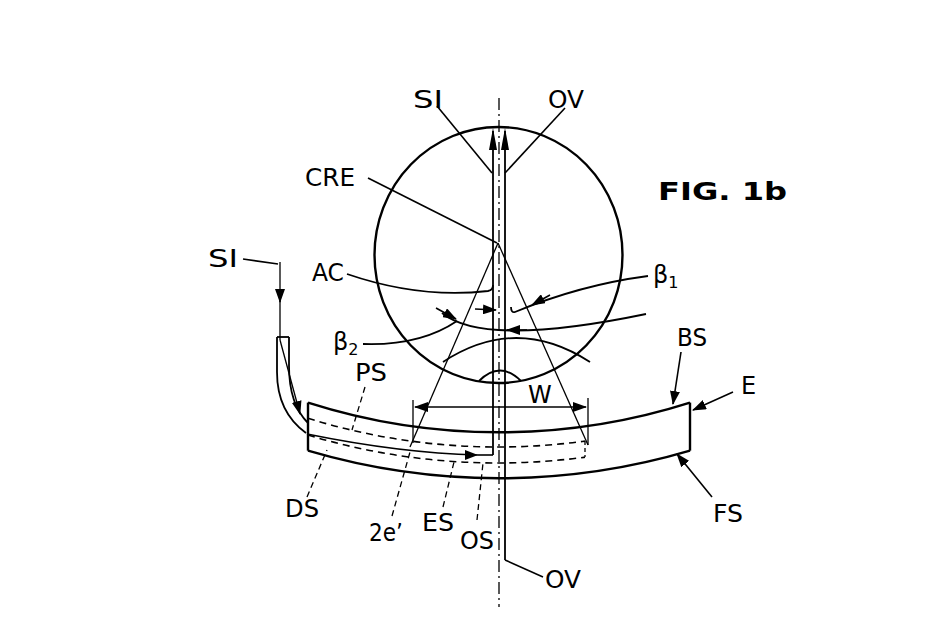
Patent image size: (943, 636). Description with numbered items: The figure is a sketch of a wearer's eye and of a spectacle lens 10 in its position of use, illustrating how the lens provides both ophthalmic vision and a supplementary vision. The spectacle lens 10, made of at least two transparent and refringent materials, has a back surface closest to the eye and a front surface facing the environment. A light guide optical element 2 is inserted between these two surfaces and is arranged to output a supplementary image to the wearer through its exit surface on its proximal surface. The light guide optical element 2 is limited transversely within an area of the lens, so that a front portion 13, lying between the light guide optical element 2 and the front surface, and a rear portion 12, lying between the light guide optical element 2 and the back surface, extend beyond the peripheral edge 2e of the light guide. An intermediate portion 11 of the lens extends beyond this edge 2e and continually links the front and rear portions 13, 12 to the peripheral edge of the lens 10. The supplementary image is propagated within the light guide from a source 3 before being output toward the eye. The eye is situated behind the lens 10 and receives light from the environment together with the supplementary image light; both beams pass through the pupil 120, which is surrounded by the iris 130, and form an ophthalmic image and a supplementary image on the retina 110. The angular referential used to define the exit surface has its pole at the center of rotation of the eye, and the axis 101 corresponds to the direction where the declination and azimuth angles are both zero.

The retina 110 is at (496, 124).
The pupil 120 is at (523, 357).
The iris 130 is at (565, 315).
The axis where the declination and azimuth angles are zero 101 is at (497, 590).
The spectacle lens 10 is at (641, 463).
The intermediate portion 11 is at (602, 450).
The rear portion 12 is at (553, 440).
The front portion 13 is at (536, 468).
The light guide optical element 2 is at (395, 448).
The peripheral edge of the light guide optical element 2e is at (305, 440).
The source 3 is at (277, 356).